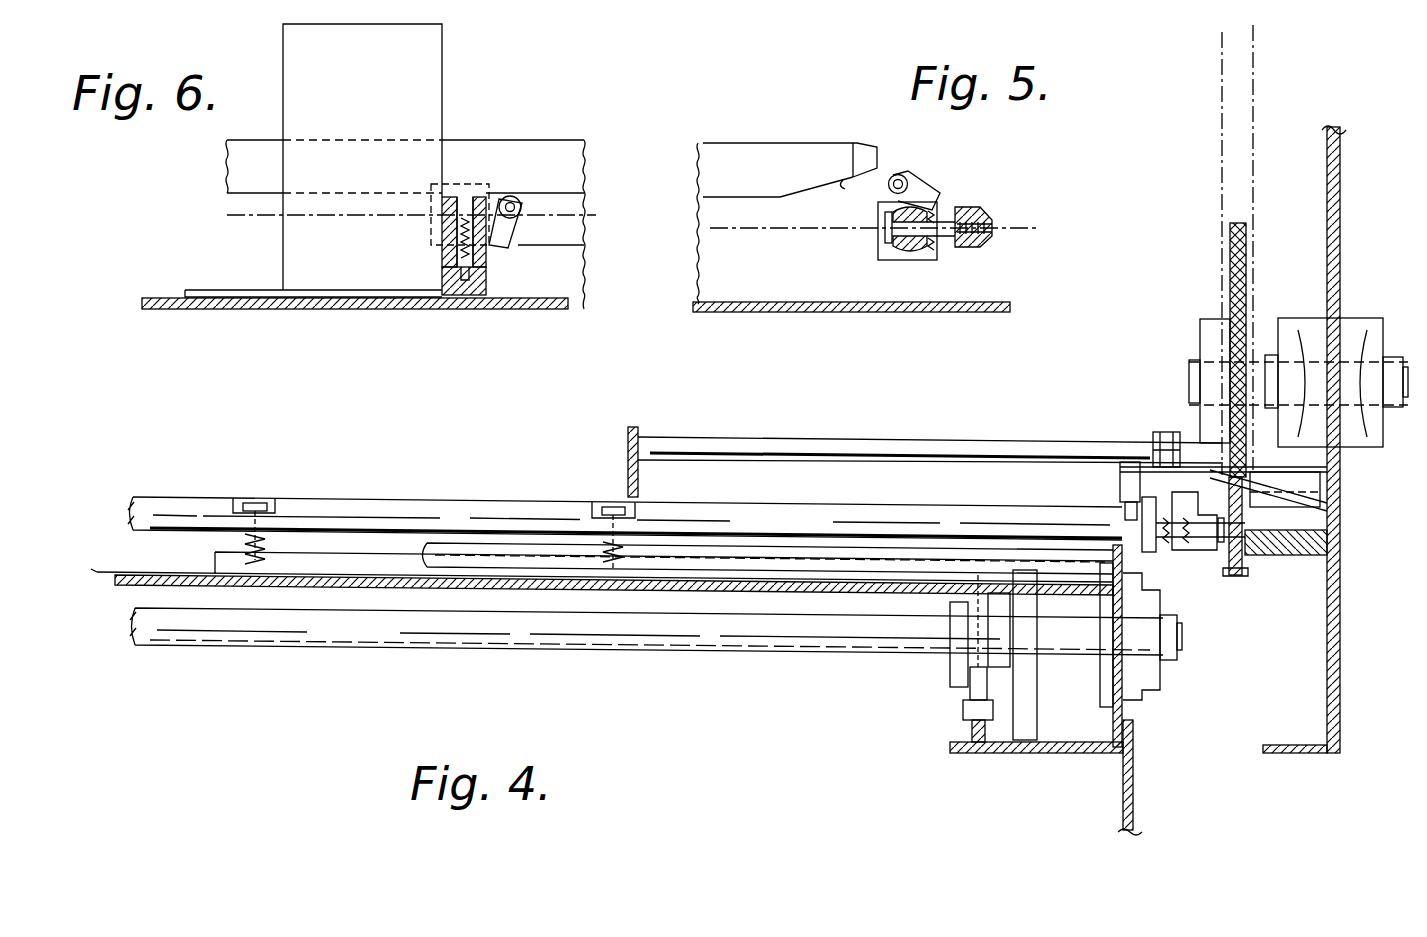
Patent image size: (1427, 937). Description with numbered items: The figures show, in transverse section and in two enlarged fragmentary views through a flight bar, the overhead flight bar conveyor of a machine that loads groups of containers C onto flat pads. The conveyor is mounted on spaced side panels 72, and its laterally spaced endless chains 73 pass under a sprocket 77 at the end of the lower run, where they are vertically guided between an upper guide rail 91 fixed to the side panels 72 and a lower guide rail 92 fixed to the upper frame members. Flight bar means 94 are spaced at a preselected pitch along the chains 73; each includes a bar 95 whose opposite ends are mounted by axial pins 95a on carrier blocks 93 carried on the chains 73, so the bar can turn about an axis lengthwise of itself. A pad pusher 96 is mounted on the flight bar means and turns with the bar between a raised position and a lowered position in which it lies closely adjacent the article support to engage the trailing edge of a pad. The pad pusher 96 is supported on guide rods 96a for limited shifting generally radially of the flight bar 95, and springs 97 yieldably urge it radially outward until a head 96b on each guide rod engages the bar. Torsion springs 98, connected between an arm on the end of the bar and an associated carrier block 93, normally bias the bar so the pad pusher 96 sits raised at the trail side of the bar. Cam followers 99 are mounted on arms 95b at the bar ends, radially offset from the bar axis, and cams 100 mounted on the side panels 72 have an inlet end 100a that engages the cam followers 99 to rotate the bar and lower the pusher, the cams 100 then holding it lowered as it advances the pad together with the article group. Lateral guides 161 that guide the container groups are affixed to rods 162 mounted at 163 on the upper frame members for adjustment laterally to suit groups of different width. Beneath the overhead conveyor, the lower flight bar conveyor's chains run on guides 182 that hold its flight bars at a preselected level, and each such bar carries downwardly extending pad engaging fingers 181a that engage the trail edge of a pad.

In FIG. 6, the container C is at (419, 75).
In FIG. 4, the side panel 72 is at (1340, 185).
In FIG. 4, the endless chain 73 is at (1222, 160).
In FIG. 4, the sprocket 77 is at (1230, 263).
In FIG. 4, the upper guide rail 91 is at (1270, 538).
In FIG. 4, the lower guide rail 92 is at (1237, 573).
In FIG. 5, the carrier block 93 is at (920, 263).
In FIG. 4, the carrier block 93 is at (1188, 492).
In FIG. 6, the flight bar means 94 is at (506, 263).
In FIG. 5, the flight bar means 94 is at (872, 260).
In FIG. 6, the flight bar 95 is at (433, 206).
In FIG. 4, the flight bar 95 is at (700, 483).
In FIG. 4, the axial pin 95a is at (1205, 553).
In FIG. 6, the arm 95b is at (572, 245).
In FIG. 5, the arm 95b is at (932, 187).
In FIG. 4, the arm 95b is at (1140, 530).
In FIG. 6, the pad pusher 96 is at (444, 295).
In FIG. 5, the pad pusher 96 is at (990, 240).
In FIG. 4, the pad pusher 96 is at (350, 563).
In FIG. 6, the guide rod 96a is at (473, 263).
In FIG. 5, the guide rod 96a is at (973, 217).
In FIG. 4, the guide rod 96a is at (263, 503).
In FIG. 5, the head 96b is at (890, 237).
In FIG. 4, the head 96b is at (253, 500).
In FIG. 6, the spring 97 is at (462, 256).
In FIG. 5, the spring 97 is at (947, 213).
In FIG. 4, the torsion spring 98 is at (1180, 555).
In FIG. 6, the cam follower 99 is at (518, 213).
In FIG. 5, the cam follower 99 is at (905, 173).
In FIG. 4, the cam follower 99 is at (1125, 512).
In FIG. 6, the cam 100 is at (529, 152).
In FIG. 5, the cam 100 is at (770, 153).
In FIG. 4, the cam 100 is at (1130, 477).
In FIG. 5, the inlet end 100a is at (852, 173).
In FIG. 4, the lateral guide 161 is at (638, 427).
In FIG. 4, the rod 162 is at (723, 447).
In FIG. 4, the mounting 163 is at (1160, 432).
In FIG. 4, the pad engaging finger 181a is at (622, 587).
In FIG. 4, the guide 182 is at (940, 613).